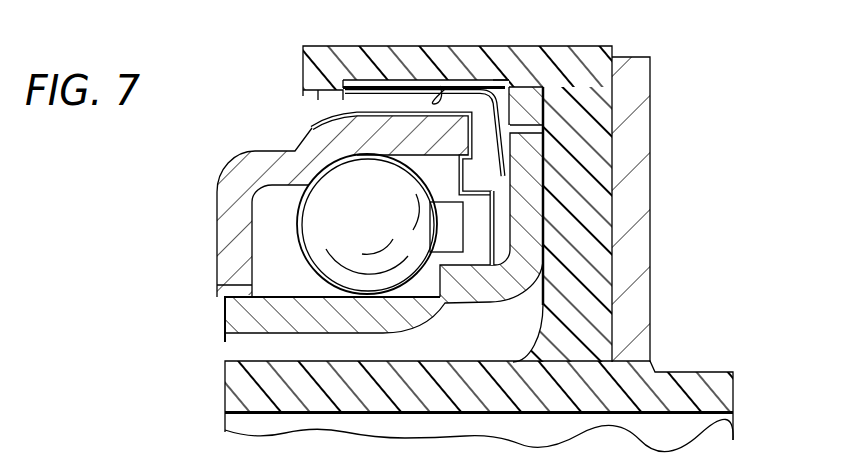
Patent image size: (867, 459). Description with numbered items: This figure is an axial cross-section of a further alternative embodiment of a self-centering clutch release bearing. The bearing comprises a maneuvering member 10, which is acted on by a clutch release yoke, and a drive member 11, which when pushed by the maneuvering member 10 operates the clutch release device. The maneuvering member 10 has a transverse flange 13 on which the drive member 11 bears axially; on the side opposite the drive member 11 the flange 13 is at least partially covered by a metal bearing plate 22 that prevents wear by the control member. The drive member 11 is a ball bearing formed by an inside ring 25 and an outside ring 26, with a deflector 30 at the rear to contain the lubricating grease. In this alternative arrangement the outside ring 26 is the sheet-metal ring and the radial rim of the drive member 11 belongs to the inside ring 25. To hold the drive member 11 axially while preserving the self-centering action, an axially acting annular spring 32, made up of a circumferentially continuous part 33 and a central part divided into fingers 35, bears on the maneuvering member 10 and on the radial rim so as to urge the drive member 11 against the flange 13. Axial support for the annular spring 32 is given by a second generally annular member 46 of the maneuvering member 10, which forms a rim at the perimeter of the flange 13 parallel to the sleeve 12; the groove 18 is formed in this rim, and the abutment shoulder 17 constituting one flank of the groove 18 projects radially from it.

The maneuvering member 10 is at (675, 123).
The drive member 11 is at (250, 124).
The sleeve 12 is at (240, 380).
The transverse flange 13 is at (600, 252).
The abutment shoulder 17 is at (497, 63).
The groove 18 is at (446, 88).
The bearing plate 22 is at (640, 208).
The inside ring 25 is at (257, 313).
The outside ring 26 is at (350, 135).
The deflector 30 is at (499, 212).
The annular spring 32 is at (481, 81).
The circumferentially continuous part 33 is at (497, 137).
The fingers 35 is at (370, 80).
The second generally annular member 46 is at (402, 62).